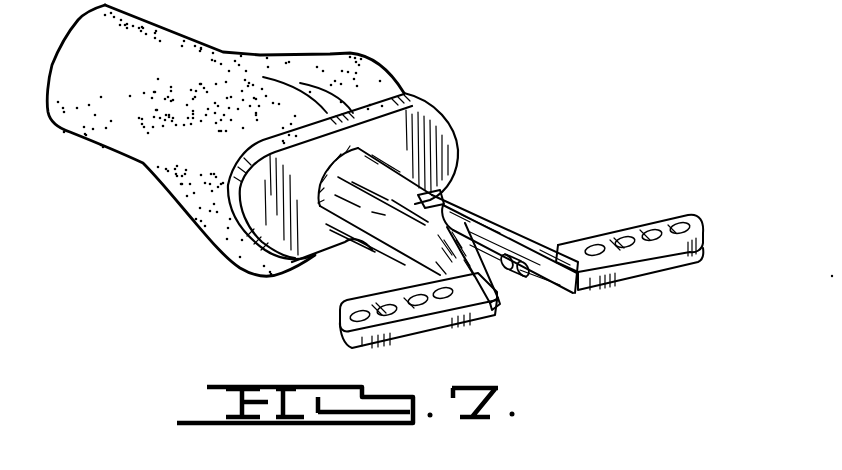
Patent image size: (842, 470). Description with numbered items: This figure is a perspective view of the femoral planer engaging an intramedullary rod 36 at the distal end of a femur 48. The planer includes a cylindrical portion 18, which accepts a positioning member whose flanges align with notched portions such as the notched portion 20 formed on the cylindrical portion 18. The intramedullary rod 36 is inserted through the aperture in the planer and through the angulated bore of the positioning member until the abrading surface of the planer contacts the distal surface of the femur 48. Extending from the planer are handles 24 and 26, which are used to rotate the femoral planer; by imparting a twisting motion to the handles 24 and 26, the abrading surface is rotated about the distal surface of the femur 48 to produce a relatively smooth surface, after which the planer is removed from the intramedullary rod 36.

The femur 48 is at (386, 70).
The cylindrical portion 18 is at (380, 159).
The notched portion 20 is at (447, 188).
The handle 24 is at (678, 217).
The handle 26 is at (340, 333).
The intramedullary rod 36 is at (510, 268).